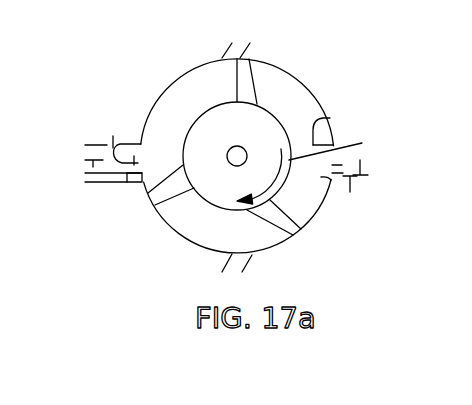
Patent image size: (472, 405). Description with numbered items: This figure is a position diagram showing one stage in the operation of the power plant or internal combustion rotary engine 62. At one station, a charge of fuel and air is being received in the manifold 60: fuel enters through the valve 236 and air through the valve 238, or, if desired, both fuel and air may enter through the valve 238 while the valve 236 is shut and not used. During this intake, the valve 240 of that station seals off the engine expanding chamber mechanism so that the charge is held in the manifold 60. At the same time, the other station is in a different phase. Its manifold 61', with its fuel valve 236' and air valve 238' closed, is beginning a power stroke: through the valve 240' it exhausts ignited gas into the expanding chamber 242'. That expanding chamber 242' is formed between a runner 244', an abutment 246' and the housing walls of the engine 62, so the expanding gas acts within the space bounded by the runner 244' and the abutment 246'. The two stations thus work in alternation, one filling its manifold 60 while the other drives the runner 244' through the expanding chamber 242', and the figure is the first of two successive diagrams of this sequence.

The internal combustion rotary engine 62 is at (300, 67).
The valve 240 is at (118, 133).
The fuel valve 236 is at (74, 134).
The air valve 238 is at (86, 167).
The manifold 60 is at (136, 192).
The abutment 246' is at (349, 125).
The valve 240' is at (381, 123).
The manifold 61' is at (355, 146).
The air valve 238' is at (382, 169).
The fuel valve 236' is at (374, 193).
The expanding chamber 242' is at (344, 211).
The runner 244' is at (296, 241).